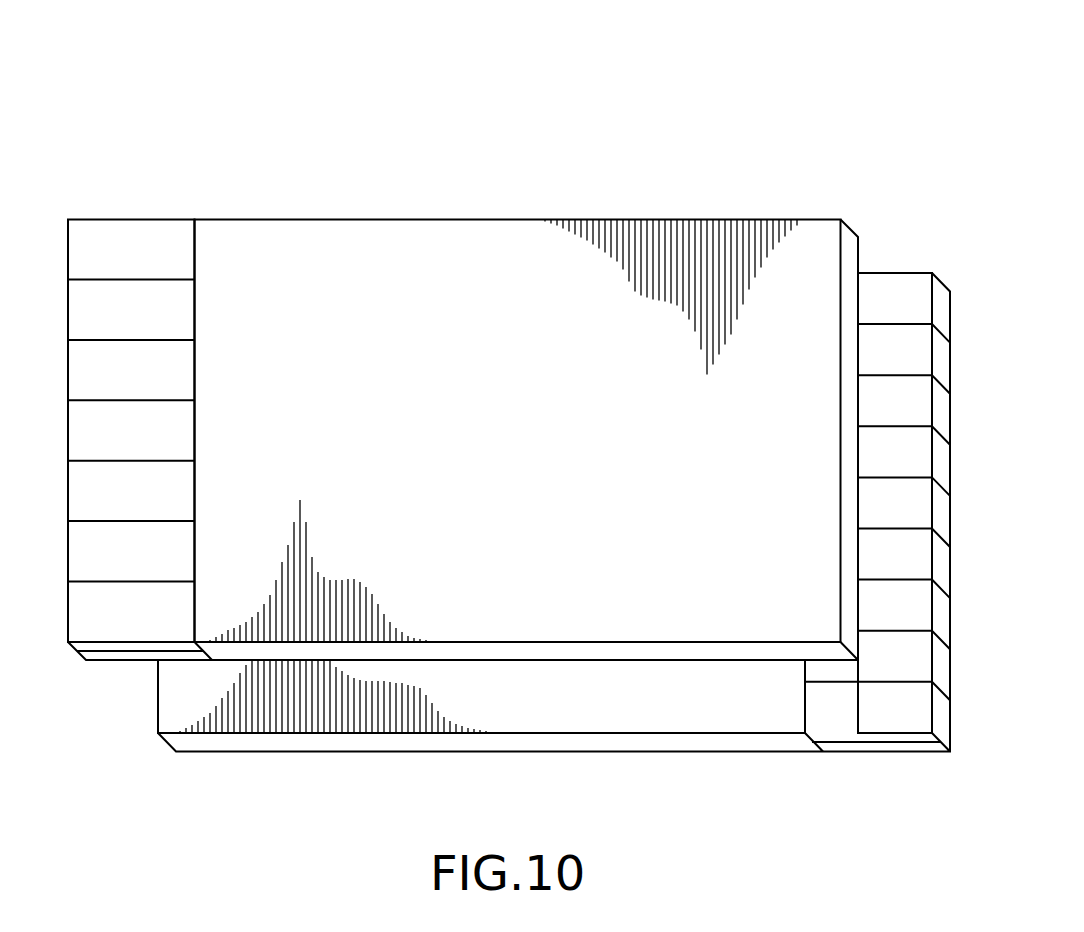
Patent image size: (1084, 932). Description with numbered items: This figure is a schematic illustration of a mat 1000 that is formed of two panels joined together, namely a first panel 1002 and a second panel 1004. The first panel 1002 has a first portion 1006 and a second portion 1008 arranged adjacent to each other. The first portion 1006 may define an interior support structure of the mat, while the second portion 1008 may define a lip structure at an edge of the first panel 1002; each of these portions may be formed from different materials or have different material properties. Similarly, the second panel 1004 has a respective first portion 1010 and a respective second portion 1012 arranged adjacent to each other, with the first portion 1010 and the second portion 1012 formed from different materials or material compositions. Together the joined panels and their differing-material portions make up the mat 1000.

The mat 1000 is at (677, 103).
The first panel 1002 is at (823, 263).
The second panel 1004 is at (175, 697).
The first portion 1006 is at (858, 212).
The second portion 1008 is at (194, 212).
The first portion 1010 is at (820, 758).
The second portion 1012 is at (950, 758).